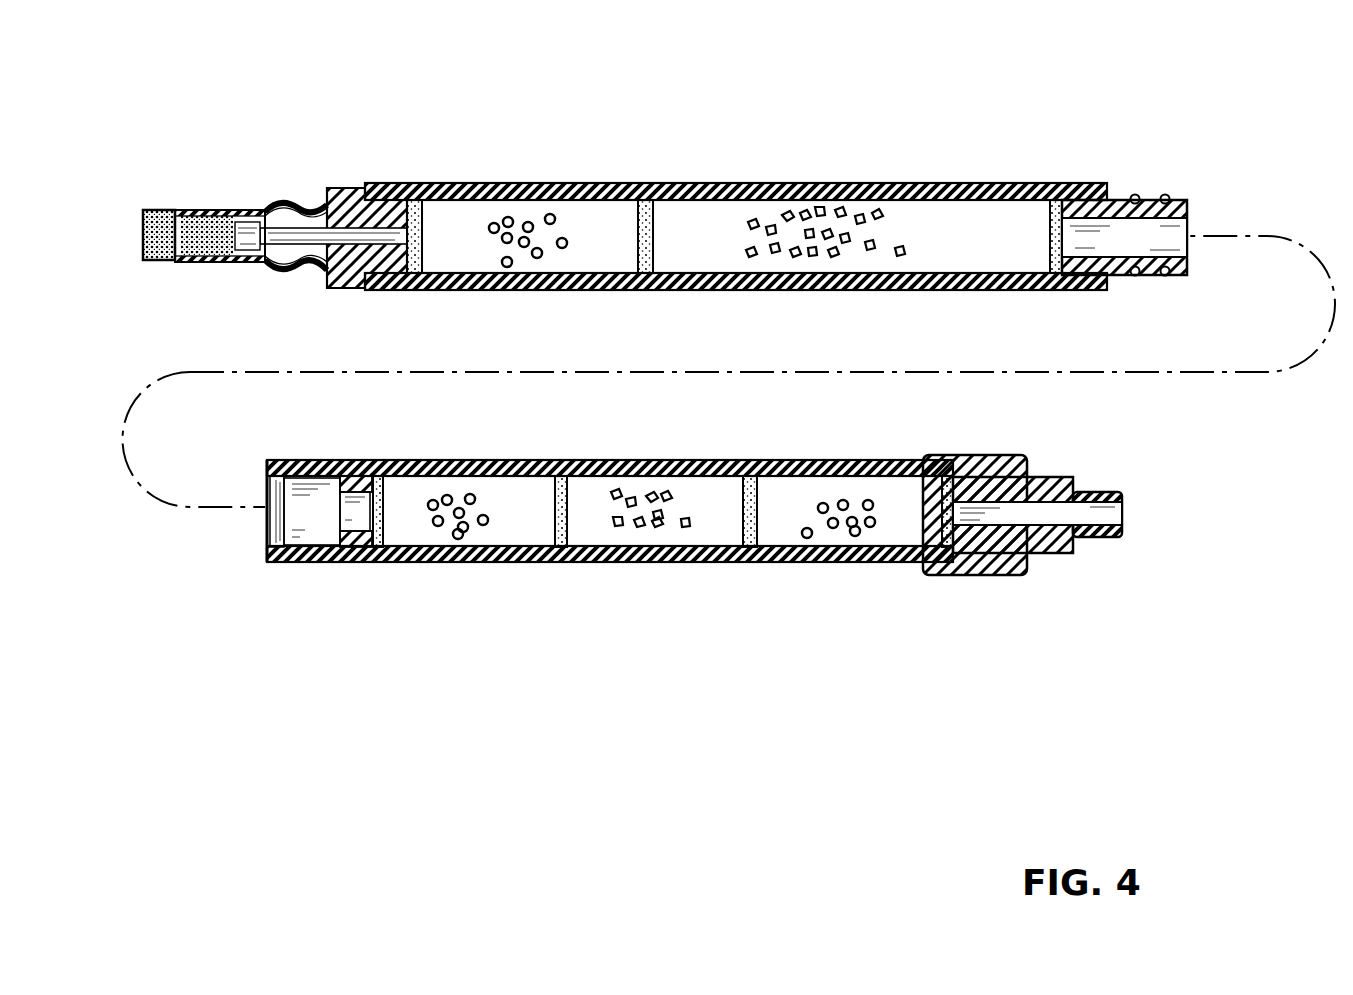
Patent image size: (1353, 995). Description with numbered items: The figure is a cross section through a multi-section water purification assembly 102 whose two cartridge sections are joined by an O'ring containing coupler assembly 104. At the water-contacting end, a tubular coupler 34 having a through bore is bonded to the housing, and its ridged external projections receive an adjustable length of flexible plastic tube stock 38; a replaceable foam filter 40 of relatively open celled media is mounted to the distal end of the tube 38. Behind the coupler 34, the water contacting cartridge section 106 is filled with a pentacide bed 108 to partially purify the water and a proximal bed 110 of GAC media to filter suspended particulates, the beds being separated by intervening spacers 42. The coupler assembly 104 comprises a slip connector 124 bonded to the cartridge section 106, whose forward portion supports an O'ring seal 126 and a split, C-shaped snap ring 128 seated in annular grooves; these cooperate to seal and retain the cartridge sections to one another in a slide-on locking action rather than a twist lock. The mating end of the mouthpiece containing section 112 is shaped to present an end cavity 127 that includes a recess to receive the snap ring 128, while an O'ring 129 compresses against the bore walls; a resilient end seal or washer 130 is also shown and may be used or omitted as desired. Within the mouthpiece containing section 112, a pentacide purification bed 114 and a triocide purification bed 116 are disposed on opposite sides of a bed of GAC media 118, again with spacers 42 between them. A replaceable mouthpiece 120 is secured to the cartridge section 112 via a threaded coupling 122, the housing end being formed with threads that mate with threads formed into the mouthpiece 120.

The assembly 102 is at (615, 68).
The coupler assembly 104 is at (1200, 289).
The water contacting cartridge section 106 is at (550, 175).
The tubular coupler 34 is at (350, 188).
The flexible plastic tube stock 38 is at (268, 207).
The replaceable filter 40 is at (160, 210).
The spacers 42 is at (655, 214).
The pentacide bed 108 is at (545, 256).
The proximal bed of GAC media 110 is at (797, 212).
The slip connector 124 is at (1185, 203).
The O'ring seal 126 is at (1163, 275).
The snap ring 128 is at (1136, 273).
The mouthpiece containing section 112 is at (530, 575).
The end cavity 127 is at (268, 528).
The O'ring 129 is at (290, 460).
The end seal or washer 130 is at (365, 465).
The pentacide purification bed 114 is at (473, 498).
The bed of GAC media 118 is at (660, 497).
The triocide purification bed 116 is at (868, 500).
The replaceable mouthpiece 120 is at (1003, 458).
The threaded coupling 122 is at (965, 572).